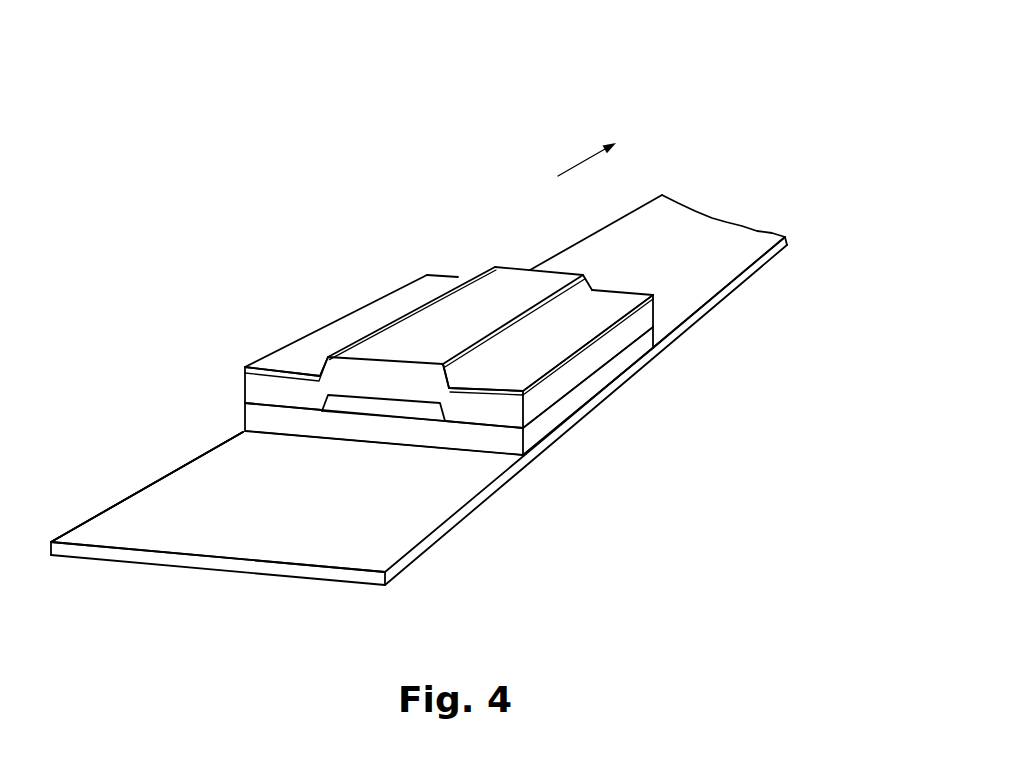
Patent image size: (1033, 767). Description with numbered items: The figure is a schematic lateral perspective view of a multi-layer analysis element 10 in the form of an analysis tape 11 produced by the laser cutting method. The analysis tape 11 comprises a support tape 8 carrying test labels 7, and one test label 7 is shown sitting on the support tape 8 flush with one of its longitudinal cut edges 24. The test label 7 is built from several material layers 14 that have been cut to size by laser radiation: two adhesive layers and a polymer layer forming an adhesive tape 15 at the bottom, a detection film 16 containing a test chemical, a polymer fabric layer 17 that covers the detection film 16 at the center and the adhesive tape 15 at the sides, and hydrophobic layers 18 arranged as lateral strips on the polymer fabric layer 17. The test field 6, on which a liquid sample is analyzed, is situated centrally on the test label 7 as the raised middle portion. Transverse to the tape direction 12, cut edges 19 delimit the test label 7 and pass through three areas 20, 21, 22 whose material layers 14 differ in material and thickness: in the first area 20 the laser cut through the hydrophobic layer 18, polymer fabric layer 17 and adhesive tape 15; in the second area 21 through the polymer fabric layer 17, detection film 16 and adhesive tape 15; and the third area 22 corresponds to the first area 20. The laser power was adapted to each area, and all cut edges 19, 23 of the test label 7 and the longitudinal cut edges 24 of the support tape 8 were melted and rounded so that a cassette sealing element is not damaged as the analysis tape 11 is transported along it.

The test field 6 is at (505, 288).
The test label 7 is at (314, 307).
The support tape 8 is at (173, 500).
The analysis element 10 is at (419, 312).
The analysis tape 11 is at (688, 128).
The tape direction 12 is at (572, 168).
The material layers 14 is at (551, 377).
The adhesive tape 15 is at (553, 424).
The detection film 16 is at (398, 410).
The polymer fabric layer 17 is at (615, 343).
The hydrophobic layers 18 is at (413, 293).
The cut edges 19 is at (470, 261).
The first area 20 is at (295, 395).
The second area 21 is at (363, 407).
The third area 22 is at (468, 415).
The cut edges 23 is at (247, 365).
The longitudinal cut edges 24 is at (107, 510).